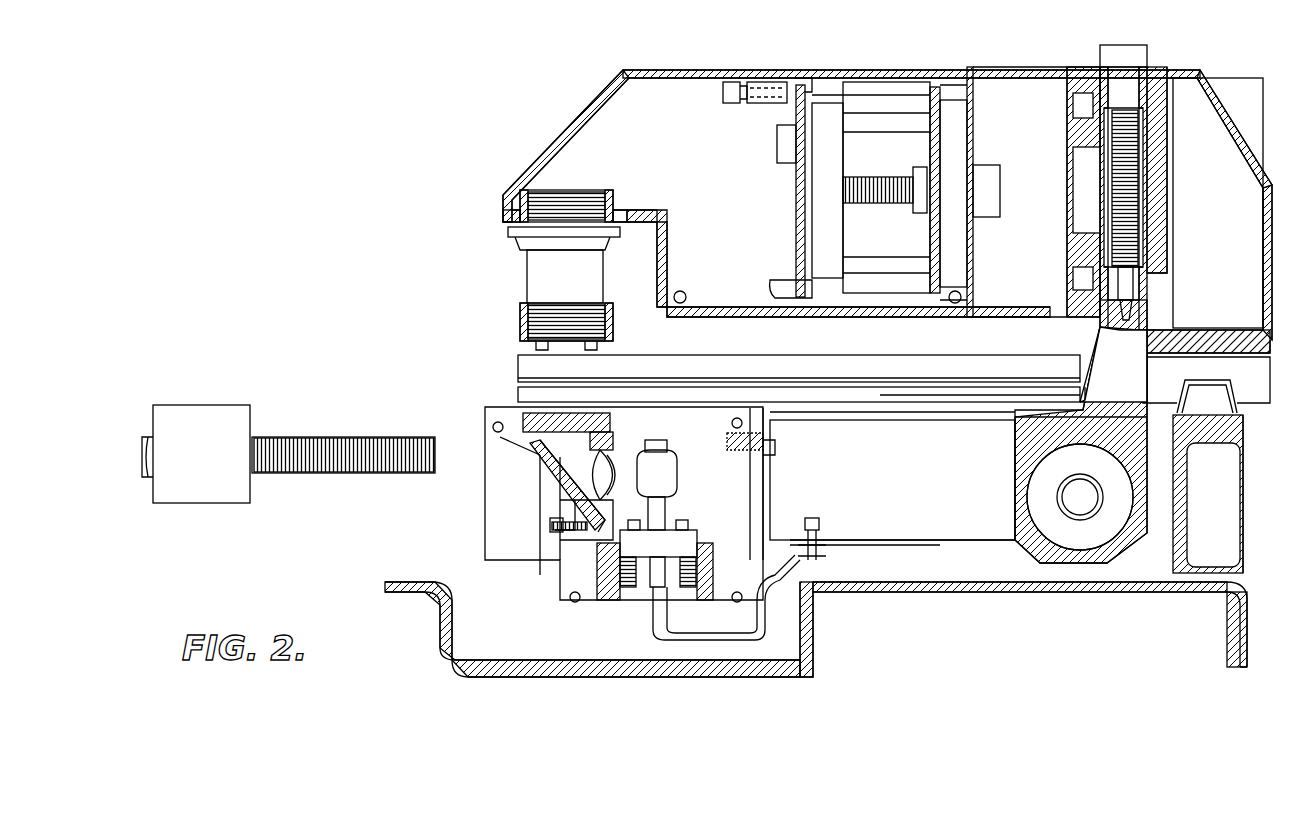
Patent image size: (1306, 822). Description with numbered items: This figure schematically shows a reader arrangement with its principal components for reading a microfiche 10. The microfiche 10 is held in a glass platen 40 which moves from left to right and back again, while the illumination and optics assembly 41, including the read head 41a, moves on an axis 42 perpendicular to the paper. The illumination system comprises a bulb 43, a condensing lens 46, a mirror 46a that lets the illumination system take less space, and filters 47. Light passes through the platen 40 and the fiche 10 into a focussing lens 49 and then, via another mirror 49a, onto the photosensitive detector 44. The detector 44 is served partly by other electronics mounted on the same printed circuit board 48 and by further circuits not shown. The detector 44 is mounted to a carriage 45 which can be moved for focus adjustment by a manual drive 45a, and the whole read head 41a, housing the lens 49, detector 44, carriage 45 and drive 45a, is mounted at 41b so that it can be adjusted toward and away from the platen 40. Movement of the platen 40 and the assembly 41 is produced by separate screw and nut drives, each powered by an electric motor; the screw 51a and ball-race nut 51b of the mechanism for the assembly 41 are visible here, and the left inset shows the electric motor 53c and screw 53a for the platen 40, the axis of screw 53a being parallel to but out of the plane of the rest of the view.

The microfiche 10 is at (712, 384).
The glass platen 40 is at (522, 368).
The illumination and optics assembly 41 is at (1273, 185).
The read head 41a is at (568, 120).
The read head mounting 41b is at (1145, 141).
The axis 42 is at (1080, 497).
The bulb 43 is at (665, 483).
The photosensitive detector 44 is at (777, 148).
The carriage 45 is at (830, 120).
The manual drive 45a is at (990, 207).
The condensing lens 46 is at (595, 472).
The mirror 46a is at (548, 468).
The filters 47 is at (615, 426).
The printed circuit board 48 is at (800, 84).
The focussing lens 49 is at (540, 275).
The mirror 49a is at (575, 150).
The screw 51a is at (1100, 490).
The ball-race nut 51b is at (1108, 522).
The screw 53a is at (360, 470).
The electric motor 53c is at (226, 495).